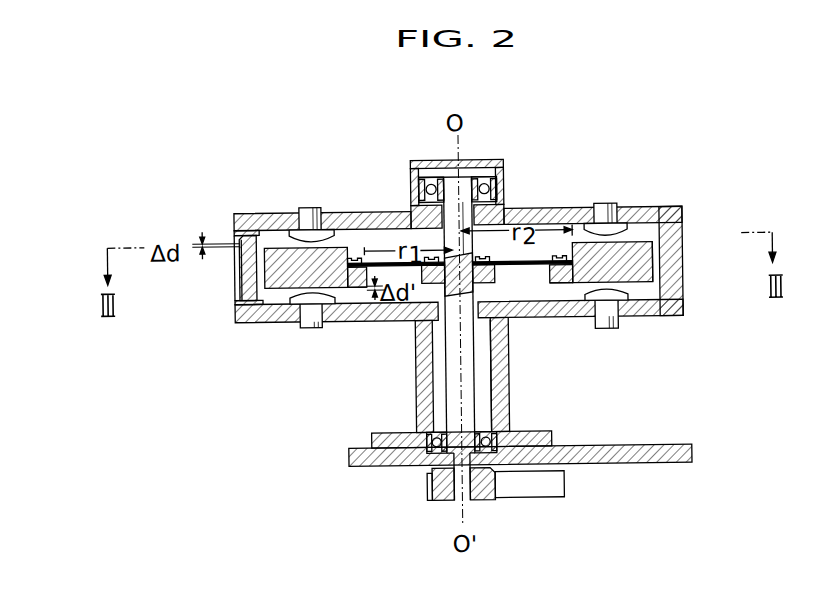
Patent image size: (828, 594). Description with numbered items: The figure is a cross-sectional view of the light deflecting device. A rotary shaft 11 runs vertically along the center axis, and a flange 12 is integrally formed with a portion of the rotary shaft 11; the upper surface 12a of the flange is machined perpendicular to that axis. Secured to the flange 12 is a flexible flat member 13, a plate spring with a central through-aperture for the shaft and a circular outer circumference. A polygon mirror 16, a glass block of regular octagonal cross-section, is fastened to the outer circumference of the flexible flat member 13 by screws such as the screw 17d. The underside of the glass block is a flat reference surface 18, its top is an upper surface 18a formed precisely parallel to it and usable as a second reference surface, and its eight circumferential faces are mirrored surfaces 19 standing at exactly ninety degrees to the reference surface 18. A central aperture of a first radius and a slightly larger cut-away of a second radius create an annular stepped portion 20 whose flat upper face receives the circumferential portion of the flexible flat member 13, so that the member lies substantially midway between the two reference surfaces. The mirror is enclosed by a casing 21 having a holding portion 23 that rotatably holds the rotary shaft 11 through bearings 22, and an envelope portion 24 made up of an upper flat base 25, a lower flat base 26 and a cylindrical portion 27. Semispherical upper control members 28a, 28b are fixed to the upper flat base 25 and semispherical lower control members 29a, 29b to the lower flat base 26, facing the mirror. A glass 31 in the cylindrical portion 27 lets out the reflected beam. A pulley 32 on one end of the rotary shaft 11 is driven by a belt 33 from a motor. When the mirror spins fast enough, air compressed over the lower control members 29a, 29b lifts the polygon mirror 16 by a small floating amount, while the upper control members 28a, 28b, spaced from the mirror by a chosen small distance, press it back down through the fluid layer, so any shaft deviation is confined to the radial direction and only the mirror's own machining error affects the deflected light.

The rotary shaft 11 is at (465, 383).
The flange 12 is at (425, 284).
The upper surface of the flange 12a is at (497, 276).
The flexible flat member 13 is at (533, 262).
The polygon mirror 16 is at (283, 255).
The screw 17d is at (355, 262).
The reference surface 18 is at (643, 285).
The upper surface of the glass block 18a is at (647, 242).
The mirrored surface 19 is at (241, 290).
The annular stepped portion 20 is at (350, 288).
The casing 21 is at (281, 321).
The bearings 22 is at (490, 183).
The holding portion 23 is at (490, 157).
The envelope portion 24 is at (567, 208).
The upper flat base 25 is at (347, 211).
The lower flat base 26 is at (520, 304).
The cylindrical portion 27 is at (684, 302).
The upper control member 28a is at (312, 206).
The upper control member 28b is at (607, 226).
The lower control member 29a is at (311, 327).
The lower control member 29b is at (607, 330).
The glass 31 is at (241, 266).
The pulley 32 is at (441, 500).
The belt 33 is at (548, 484).